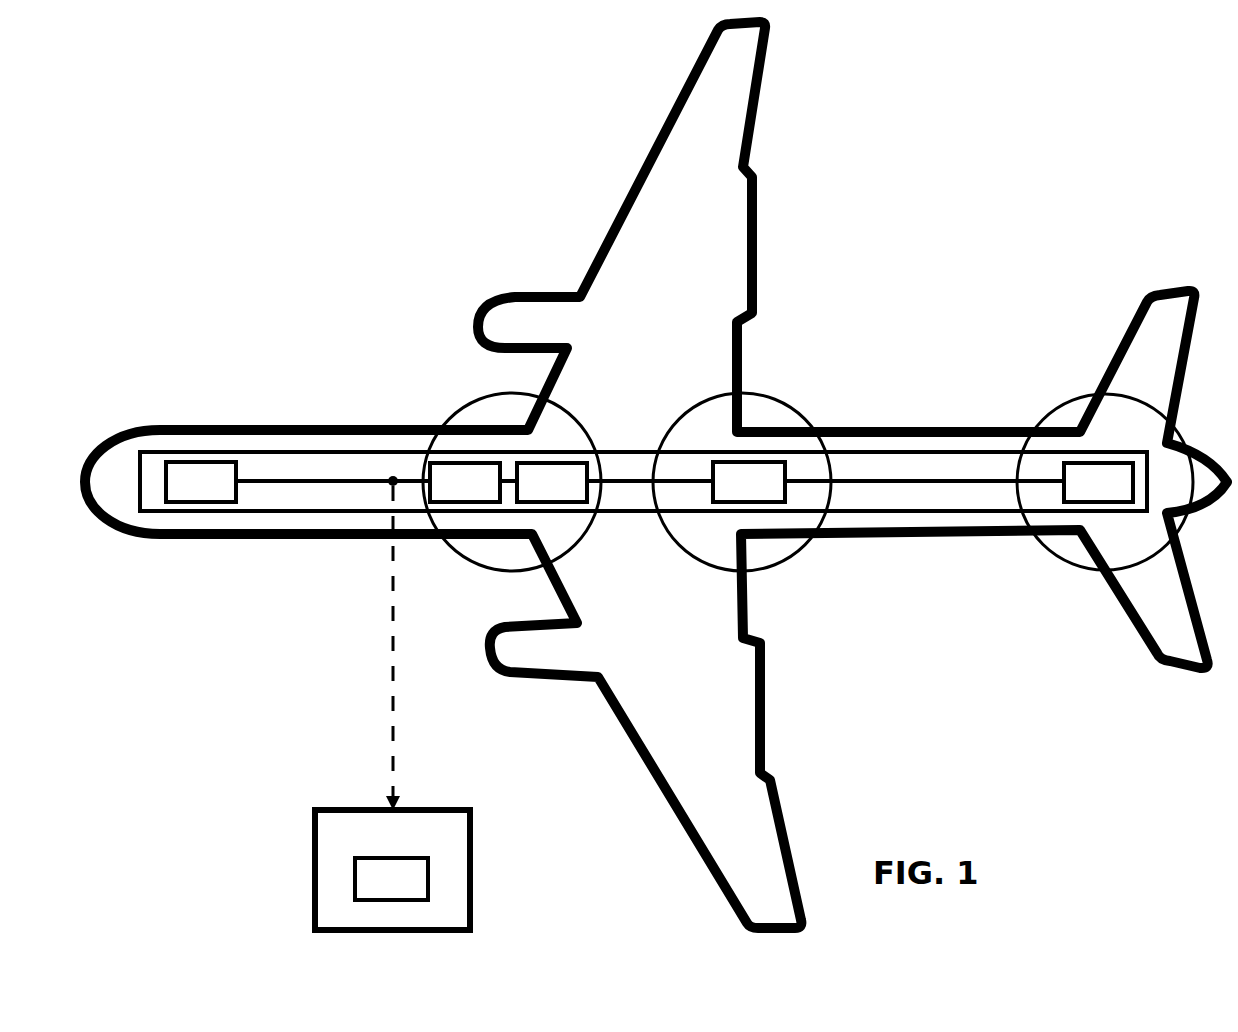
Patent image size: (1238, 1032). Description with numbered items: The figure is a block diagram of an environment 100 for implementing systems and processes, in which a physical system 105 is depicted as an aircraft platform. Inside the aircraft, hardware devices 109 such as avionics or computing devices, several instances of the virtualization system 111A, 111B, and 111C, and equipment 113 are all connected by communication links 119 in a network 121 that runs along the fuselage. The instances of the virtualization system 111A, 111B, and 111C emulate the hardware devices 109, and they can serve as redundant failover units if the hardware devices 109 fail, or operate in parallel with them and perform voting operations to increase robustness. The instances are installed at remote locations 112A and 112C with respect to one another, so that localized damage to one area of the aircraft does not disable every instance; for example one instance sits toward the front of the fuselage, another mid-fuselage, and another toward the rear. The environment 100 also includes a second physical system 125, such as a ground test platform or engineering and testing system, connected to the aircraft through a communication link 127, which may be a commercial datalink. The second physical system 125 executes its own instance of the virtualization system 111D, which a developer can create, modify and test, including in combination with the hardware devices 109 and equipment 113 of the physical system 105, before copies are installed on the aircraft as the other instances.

The environment 100 is at (962, 166).
The physical system 105 is at (962, 425).
The hardware devices 109 is at (552, 482).
The virtualization system instance 111A is at (465, 482).
The virtualization system instance 111B is at (749, 482).
The virtualization system instance 111C is at (1098, 482).
The virtualization system instance 111D is at (391, 879).
The location 112A is at (477, 398).
The location 112C is at (775, 400).
The equipment 113 is at (201, 482).
The communication links 119 is at (367, 478).
The network 121 is at (270, 452).
The second physical system 125 is at (392, 870).
The communication link 127 is at (392, 607).